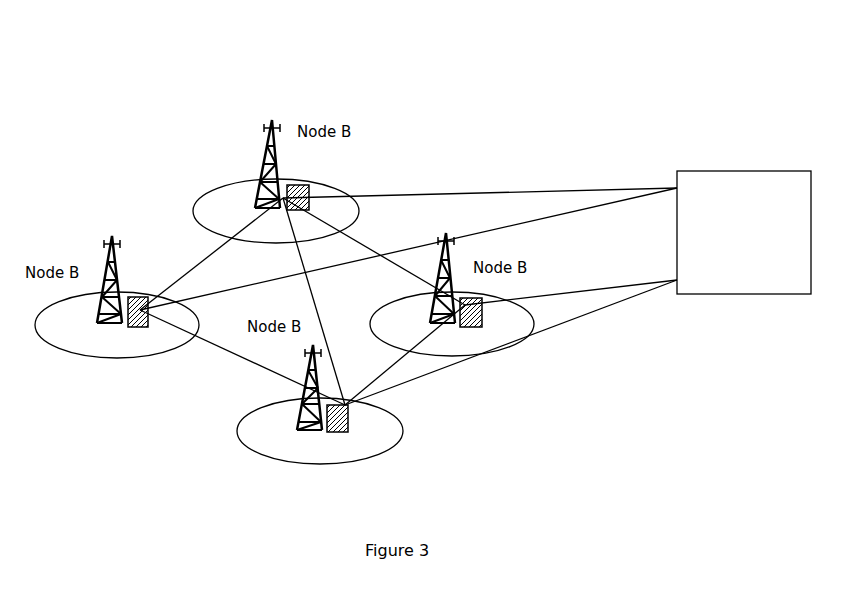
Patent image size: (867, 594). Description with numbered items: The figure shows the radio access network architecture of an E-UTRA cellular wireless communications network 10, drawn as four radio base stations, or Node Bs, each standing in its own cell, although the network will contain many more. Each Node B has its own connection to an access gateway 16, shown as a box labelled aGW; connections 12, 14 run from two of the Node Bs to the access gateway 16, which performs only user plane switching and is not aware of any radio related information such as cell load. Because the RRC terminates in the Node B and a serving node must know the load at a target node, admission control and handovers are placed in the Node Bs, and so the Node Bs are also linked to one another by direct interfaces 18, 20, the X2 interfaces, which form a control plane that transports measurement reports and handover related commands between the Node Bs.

The network 10 is at (519, 96).
The connection 12 is at (593, 312).
The connection 14 is at (612, 288).
The access gateway 16 is at (740, 171).
The direct interface 18 is at (420, 368).
The direct interface 20 is at (237, 370).